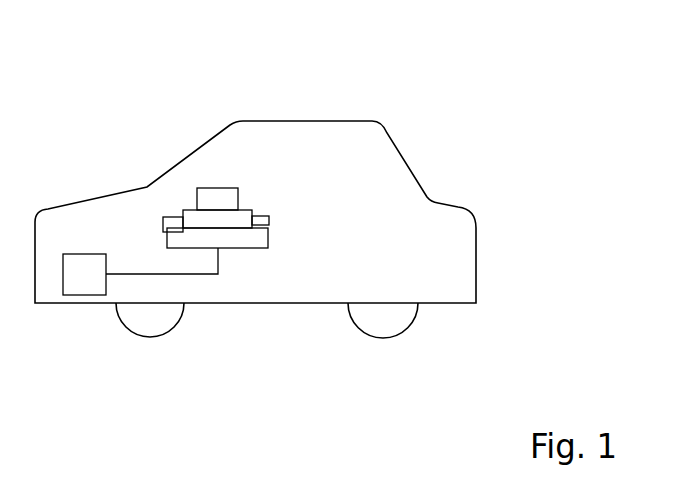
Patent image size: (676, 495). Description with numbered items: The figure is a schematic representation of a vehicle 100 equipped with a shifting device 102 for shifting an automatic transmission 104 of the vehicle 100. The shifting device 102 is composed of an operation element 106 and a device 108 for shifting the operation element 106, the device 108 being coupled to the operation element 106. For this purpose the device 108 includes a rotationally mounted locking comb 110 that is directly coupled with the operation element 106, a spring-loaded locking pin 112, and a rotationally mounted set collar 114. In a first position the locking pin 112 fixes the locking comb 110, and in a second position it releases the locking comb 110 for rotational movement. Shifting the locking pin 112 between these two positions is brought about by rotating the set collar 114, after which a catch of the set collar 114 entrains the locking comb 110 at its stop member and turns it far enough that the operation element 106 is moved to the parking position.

The vehicle 100 is at (327, 113).
The shifting device 102 is at (220, 173).
The automatic transmission 104 is at (83, 275).
The operation element 106 is at (212, 198).
The device for shifting the operation element 108 is at (287, 231).
The locking comb 110 is at (246, 216).
The locking pin 112 is at (173, 218).
The set collar 114 is at (243, 240).